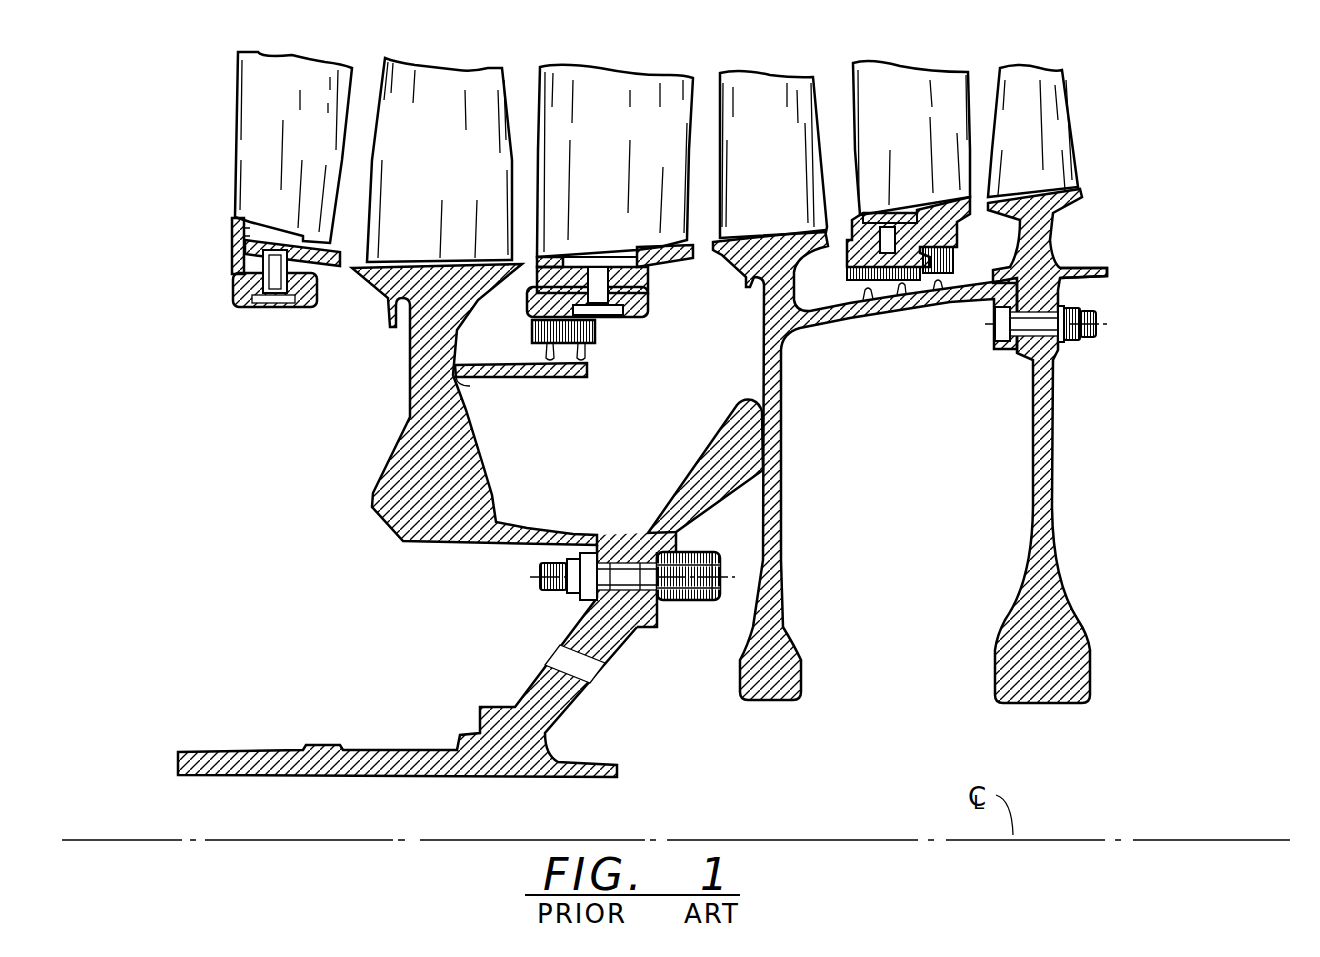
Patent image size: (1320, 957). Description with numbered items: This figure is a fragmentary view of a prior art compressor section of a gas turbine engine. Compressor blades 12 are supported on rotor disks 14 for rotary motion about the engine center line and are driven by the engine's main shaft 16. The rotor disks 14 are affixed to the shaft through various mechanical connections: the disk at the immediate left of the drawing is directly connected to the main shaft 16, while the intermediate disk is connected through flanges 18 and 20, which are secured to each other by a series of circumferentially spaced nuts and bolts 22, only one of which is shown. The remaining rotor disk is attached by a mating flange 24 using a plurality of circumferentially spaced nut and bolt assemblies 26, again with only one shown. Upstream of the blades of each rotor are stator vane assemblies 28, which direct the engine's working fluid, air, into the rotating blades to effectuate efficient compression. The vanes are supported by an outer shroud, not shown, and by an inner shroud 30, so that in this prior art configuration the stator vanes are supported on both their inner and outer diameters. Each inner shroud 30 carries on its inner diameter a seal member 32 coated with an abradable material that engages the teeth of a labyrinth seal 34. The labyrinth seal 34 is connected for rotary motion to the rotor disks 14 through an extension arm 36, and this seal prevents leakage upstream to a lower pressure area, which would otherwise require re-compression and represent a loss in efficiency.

The compressor blades 12 is at (408, 165).
The rotor disk 14 is at (480, 465).
The main shaft 16 is at (398, 745).
The flange 18 is at (622, 530).
The flange 20 is at (678, 537).
The nuts and bolts 22 is at (687, 607).
The mating flange 24 is at (1063, 246).
The nut and bolt assemblies 26 is at (1112, 322).
The stator vane assemblies 28 is at (252, 143).
The inner shroud 30 is at (322, 286).
The seal member 32 is at (600, 340).
The labyrinth seal 34 is at (590, 375).
The extension arm 36 is at (573, 368).